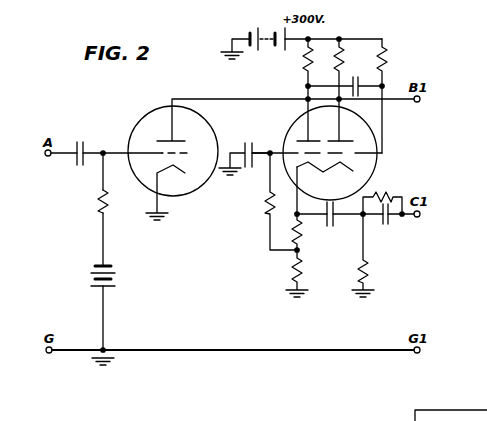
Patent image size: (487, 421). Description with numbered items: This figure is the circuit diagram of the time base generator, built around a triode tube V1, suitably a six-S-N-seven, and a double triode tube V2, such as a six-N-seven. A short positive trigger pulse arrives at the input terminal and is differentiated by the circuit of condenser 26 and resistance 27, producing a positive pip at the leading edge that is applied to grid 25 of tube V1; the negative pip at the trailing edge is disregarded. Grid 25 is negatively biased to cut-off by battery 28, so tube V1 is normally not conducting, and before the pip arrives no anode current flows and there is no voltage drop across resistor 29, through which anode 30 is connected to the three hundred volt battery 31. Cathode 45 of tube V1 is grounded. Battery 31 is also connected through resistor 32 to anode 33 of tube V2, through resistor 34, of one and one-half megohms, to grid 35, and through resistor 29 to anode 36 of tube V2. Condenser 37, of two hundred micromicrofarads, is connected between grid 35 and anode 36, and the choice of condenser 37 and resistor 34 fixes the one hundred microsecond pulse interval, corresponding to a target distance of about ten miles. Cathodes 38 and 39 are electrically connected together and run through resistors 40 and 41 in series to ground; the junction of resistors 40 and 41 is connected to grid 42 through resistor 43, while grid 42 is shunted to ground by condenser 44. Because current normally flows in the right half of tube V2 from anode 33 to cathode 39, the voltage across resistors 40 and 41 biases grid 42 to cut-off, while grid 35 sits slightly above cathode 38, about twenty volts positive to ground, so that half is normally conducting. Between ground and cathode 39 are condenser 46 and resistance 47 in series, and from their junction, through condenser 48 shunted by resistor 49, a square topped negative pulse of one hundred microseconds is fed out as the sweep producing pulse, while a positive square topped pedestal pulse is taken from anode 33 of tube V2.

The grid 25 is at (160, 156).
The condenser 26 is at (86, 144).
The resistance 27 is at (97, 197).
The battery 28 is at (96, 273).
The resistor 29 is at (305, 61).
The anode 30 is at (165, 140).
The battery 31 is at (275, 34).
The resistor 32 is at (341, 42).
The anode 33 is at (349, 139).
The resistor 34 is at (388, 52).
The grid 35 is at (345, 152).
The anode 36 is at (302, 139).
The condenser 37 is at (355, 78).
The cathode 38 is at (355, 164).
The cathode 39 is at (296, 166).
The resistor 40 is at (302, 229).
The resistor 41 is at (301, 270).
The grid 42 is at (291, 151).
The resistor 43 is at (264, 206).
The condenser 44 is at (244, 150).
The cathode 45 is at (168, 170).
The condenser 46 is at (333, 216).
The resistance 47 is at (368, 270).
The condenser 48 is at (388, 218).
The resistor 49 is at (390, 196).
The tube V1 is at (134, 125).
The tube V2 is at (287, 124).